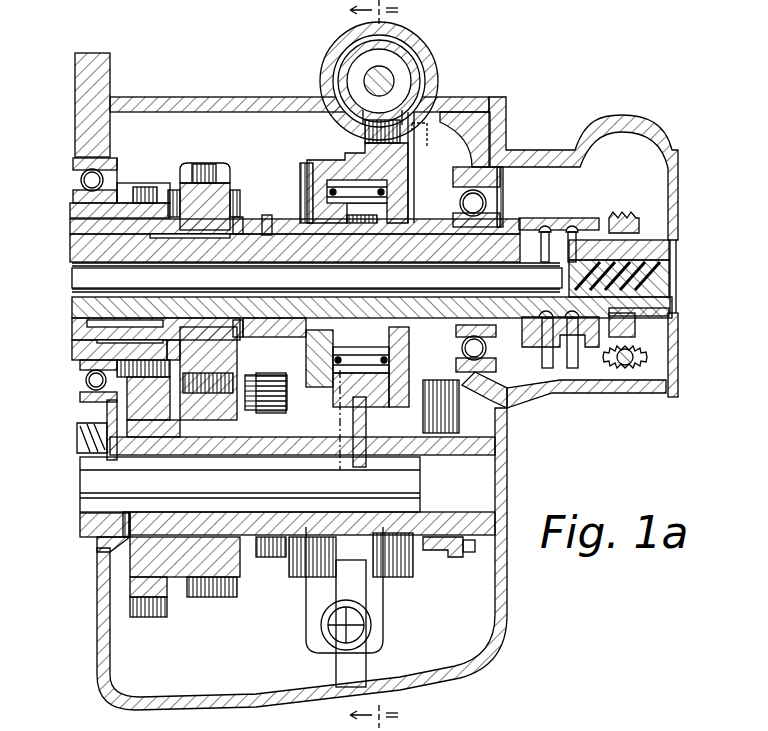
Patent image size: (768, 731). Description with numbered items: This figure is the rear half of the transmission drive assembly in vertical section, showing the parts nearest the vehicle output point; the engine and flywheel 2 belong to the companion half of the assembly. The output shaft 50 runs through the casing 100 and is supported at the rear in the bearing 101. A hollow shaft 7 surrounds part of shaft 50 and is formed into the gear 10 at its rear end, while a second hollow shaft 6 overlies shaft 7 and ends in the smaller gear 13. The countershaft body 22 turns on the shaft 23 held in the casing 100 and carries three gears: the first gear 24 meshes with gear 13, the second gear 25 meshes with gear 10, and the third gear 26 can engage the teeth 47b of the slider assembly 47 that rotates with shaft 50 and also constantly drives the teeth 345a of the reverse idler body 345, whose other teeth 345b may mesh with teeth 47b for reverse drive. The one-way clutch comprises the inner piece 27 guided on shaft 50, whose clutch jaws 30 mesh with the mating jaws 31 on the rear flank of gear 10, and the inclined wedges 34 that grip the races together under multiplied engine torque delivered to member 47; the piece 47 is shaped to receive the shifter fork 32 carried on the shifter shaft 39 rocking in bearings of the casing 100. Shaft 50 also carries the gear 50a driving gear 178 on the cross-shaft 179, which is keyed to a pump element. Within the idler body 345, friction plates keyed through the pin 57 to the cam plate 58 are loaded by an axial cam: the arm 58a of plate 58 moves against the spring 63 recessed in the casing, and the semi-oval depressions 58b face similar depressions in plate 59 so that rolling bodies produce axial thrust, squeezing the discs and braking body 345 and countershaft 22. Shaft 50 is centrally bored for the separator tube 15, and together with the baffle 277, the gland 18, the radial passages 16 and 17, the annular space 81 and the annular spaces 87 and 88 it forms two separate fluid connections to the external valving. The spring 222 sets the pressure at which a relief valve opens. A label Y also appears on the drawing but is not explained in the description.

The flywheel 2 is at (355, 365).
The second hollow shaft 6 is at (70, 210).
The hollow shaft 7 is at (70, 228).
The gear 10 is at (205, 163).
The smaller gear 13 is at (135, 185).
The separator tube 15 is at (80, 280).
The radial lead 16 is at (530, 218).
The radial lead 17 is at (615, 213).
The gland 18 is at (590, 380).
The countershaft body 22 is at (96, 540).
The shaft 23 is at (82, 475).
The first gear 24 is at (150, 617).
The second gear 25 is at (205, 597).
The third gear 26 is at (300, 577).
The inner piece 27 is at (410, 215).
The clutch jaws 30 is at (305, 180).
The mating jaws 31 is at (236, 190).
The shifter fork 32 is at (363, 113).
The wedges 34 is at (388, 192).
The shifter shaft 39 is at (385, 80).
The slider assembly 47 is at (294, 362).
The teeth 47b is at (416, 133).
The transmission output shaft 50 is at (75, 305).
The gear 50a is at (640, 220).
The pin 57 is at (410, 560).
The cam plate 58 is at (338, 466).
The arm 58a is at (345, 590).
The semi-oval depressions 58b is at (336, 677).
The plate 59 is at (362, 450).
The spring 63 is at (368, 640).
The annular space 81 is at (70, 252).
The annular space 87 is at (545, 226).
The annular space 88 is at (572, 226).
The casing 100 is at (490, 600).
The bearing 101 is at (428, 140).
The gear 178 is at (645, 357).
The cross-shaft 179 is at (632, 354).
The spring 222 is at (80, 437).
The baffle 277 is at (540, 350).
The reverse idler body 345 is at (477, 552).
The idler teeth 345a is at (275, 560).
The idler teeth 345b is at (445, 560).
The clearance Y is at (266, 215).